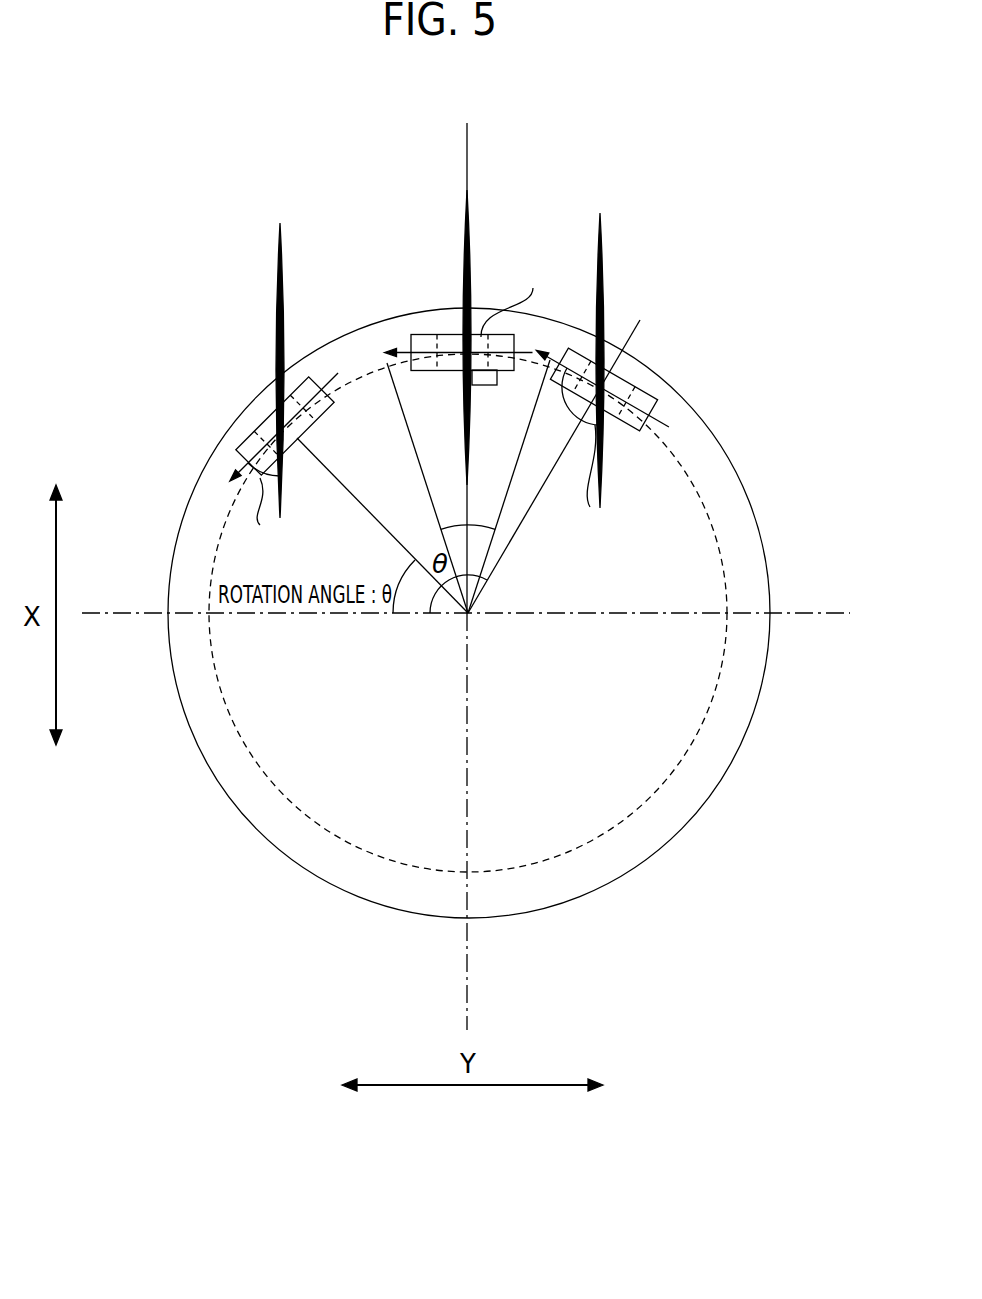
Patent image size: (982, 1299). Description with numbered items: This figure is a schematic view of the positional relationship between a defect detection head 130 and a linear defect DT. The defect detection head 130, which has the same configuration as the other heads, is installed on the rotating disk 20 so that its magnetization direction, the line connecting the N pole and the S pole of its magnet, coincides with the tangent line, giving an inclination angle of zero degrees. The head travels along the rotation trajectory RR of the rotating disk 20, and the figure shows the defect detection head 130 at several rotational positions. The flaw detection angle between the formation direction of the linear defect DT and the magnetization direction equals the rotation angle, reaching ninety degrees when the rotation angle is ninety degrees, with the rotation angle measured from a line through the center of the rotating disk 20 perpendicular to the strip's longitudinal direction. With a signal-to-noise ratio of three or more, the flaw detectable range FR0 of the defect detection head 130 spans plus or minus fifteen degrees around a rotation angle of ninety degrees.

The defect detection head 130 is at (447, 336).
The rotating disk 20 is at (562, 880).
The rotation trajectory RR is at (708, 708).
The linear defect DT is at (282, 243).
The flaw detectable range FR0 is at (473, 525).